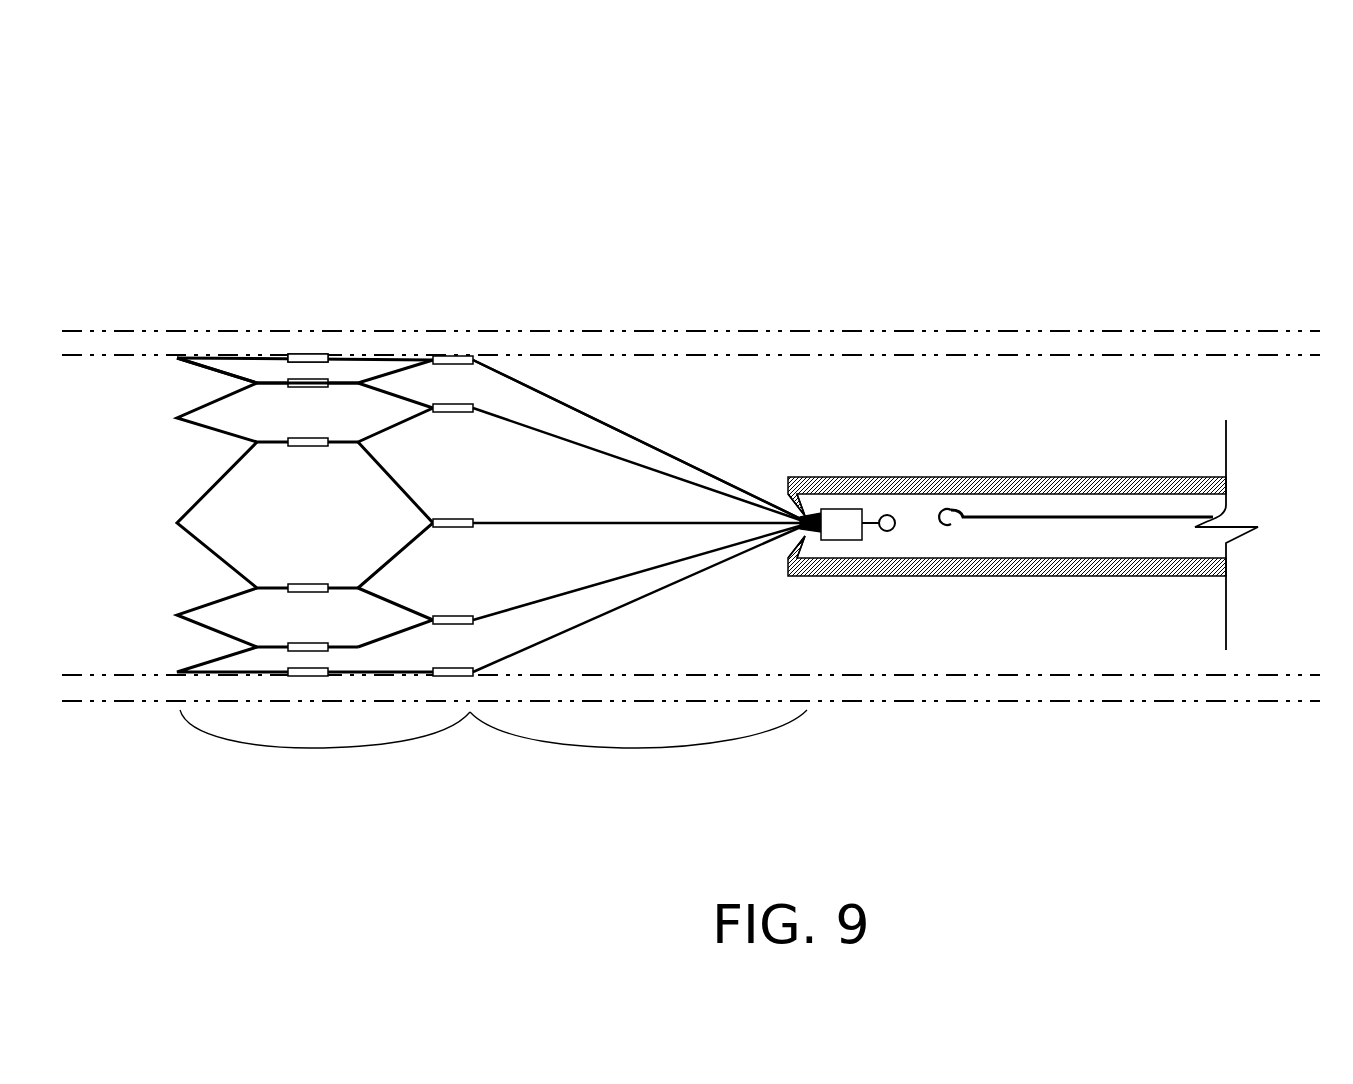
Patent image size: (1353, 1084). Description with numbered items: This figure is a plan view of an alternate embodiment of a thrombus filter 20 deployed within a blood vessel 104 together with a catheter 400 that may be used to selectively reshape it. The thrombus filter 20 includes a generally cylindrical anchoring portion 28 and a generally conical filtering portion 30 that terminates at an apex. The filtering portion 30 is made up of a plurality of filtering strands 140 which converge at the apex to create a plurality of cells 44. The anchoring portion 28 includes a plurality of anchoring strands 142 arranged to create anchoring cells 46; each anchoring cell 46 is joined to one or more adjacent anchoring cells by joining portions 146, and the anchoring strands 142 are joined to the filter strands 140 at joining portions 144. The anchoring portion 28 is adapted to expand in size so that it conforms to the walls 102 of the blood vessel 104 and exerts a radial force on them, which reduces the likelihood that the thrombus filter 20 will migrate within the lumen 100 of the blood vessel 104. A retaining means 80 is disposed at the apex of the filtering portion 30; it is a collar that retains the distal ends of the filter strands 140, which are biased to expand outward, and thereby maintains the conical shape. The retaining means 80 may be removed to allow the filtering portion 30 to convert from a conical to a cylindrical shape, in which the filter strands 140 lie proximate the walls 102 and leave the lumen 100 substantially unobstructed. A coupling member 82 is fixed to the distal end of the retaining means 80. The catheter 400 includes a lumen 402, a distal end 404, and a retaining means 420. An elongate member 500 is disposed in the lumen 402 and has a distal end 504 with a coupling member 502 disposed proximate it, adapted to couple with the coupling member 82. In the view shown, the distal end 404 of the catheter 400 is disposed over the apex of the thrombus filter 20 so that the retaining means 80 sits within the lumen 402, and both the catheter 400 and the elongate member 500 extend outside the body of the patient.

The thrombus filter 20 is at (492, 477).
The anchoring portion 28 is at (325, 445).
The filtering portion 30 is at (638, 453).
The cells 44 is at (500, 487).
The anchoring cells 46 is at (340, 418).
The retaining means 80 is at (838, 521).
The coupling member 82 is at (878, 510).
The lumen 100 is at (752, 418).
The walls 102 is at (540, 343).
The blood vessel 104 is at (580, 330).
The filtering strands 140 is at (585, 410).
The anchoring strands 142 is at (220, 357).
The joining portions 144 is at (447, 357).
The joining portions 146 is at (308, 357).
The catheter 400 is at (1031, 511).
The lumen 402 is at (918, 533).
The distal end 404 is at (809, 590).
The retaining means 420 is at (803, 535).
The elongate member 500 is at (1050, 517).
The coupling member 502 is at (945, 506).
The distal end 504 is at (961, 492).